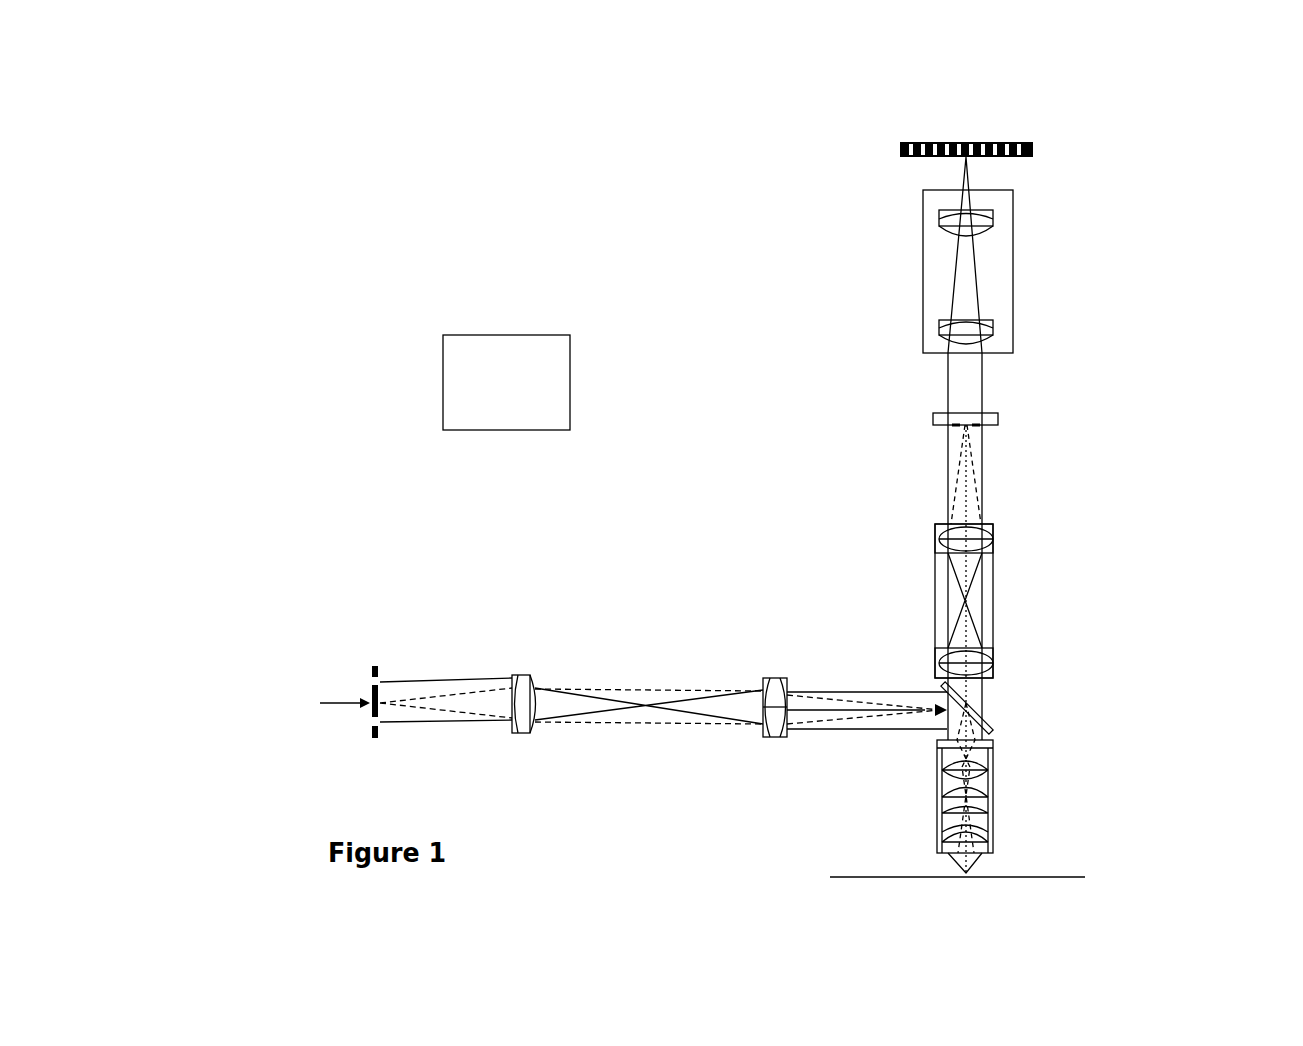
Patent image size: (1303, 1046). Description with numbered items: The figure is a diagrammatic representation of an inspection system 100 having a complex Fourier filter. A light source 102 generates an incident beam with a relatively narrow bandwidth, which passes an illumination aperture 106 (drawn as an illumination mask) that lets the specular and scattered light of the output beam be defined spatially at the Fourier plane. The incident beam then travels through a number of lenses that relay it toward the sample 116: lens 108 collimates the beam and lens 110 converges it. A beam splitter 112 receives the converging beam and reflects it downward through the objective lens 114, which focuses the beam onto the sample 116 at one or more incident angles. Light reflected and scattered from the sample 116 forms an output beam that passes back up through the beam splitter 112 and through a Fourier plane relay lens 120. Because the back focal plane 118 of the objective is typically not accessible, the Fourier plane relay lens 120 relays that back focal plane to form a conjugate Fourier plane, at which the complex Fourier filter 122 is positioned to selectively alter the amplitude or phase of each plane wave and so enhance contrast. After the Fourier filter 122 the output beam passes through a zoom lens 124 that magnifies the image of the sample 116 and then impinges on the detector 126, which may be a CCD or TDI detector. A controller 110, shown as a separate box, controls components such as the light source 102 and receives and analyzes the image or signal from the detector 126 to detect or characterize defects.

The inspection system 100 is at (1197, 100).
The light source 102 is at (307, 713).
The illumination aperture 106 is at (380, 663).
The lens 108 is at (535, 677).
The lens / controller 110 is at (785, 680).
The beam splitter 112 is at (992, 731).
The objective lens 114 is at (997, 848).
The sample 116 is at (1085, 878).
The back focal plane 118 is at (978, 767).
The Fourier plane relay lens 120 is at (997, 592).
The complex Fourier filter 122 is at (998, 422).
The zoom lens 124 is at (1005, 286).
The detector 126 is at (1037, 145).